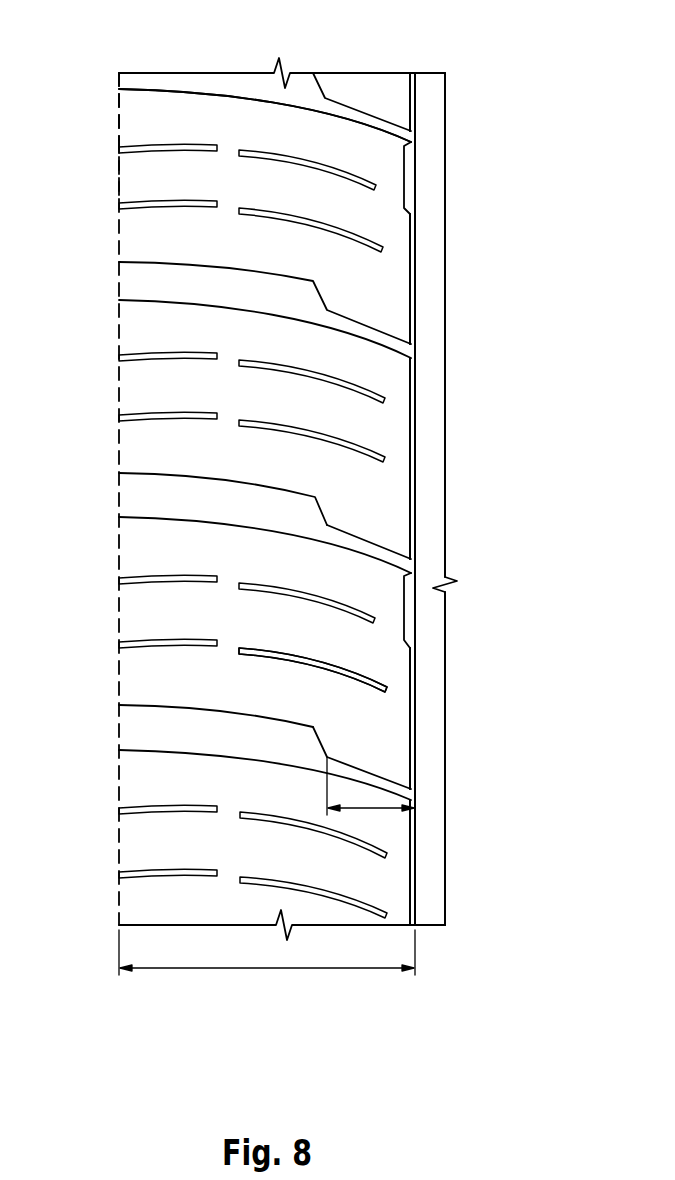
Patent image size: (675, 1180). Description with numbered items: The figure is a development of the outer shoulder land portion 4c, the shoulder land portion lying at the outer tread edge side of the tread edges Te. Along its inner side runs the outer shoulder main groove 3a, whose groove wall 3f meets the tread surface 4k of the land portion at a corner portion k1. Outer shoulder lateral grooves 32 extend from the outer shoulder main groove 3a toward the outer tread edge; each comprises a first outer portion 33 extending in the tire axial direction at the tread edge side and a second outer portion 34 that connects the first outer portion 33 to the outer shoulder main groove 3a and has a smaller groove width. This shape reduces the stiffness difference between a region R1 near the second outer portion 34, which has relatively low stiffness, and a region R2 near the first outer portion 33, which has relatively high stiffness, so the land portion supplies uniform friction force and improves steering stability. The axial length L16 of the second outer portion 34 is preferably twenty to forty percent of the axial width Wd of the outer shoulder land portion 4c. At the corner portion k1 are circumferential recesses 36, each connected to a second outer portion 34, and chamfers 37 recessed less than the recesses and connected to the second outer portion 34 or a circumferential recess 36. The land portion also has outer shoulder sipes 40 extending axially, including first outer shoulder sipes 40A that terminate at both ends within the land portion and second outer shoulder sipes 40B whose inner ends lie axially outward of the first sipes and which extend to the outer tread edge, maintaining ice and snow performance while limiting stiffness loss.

The tread edge Te is at (119, 100).
The outer shoulder land portion 4c is at (228, 118).
The tread surface 4k is at (265, 115).
The outer shoulder main groove 3a is at (428, 96).
The groove wall 3f is at (417, 117).
The circumferential recess 36 is at (408, 177).
The outer shoulder lateral groove 32 is at (303, 298).
The chamfer 37 is at (413, 387).
The first outer portion 33 is at (290, 512).
The second outer portion 34 is at (370, 545).
The second outer shoulder sipe 40B is at (168, 642).
The outer shoulder sipe 40 is at (323, 662).
The first outer shoulder sipe 40A is at (313, 670).
The region R2 is at (233, 683).
The region R1 is at (363, 725).
The length L16 is at (372, 810).
The width Wd is at (267, 961).
The corner portion k1 is at (427, 943).